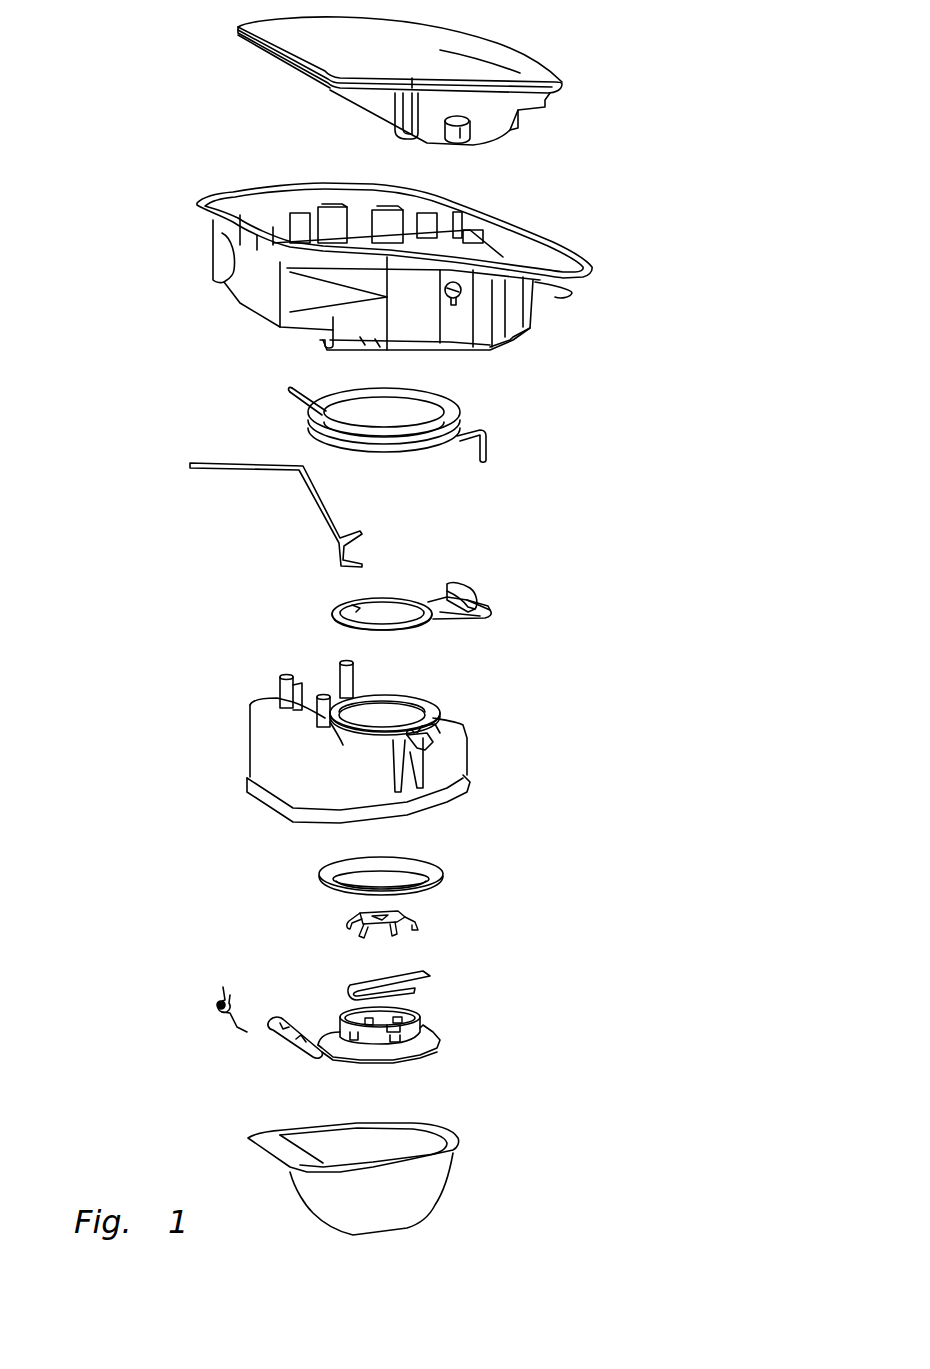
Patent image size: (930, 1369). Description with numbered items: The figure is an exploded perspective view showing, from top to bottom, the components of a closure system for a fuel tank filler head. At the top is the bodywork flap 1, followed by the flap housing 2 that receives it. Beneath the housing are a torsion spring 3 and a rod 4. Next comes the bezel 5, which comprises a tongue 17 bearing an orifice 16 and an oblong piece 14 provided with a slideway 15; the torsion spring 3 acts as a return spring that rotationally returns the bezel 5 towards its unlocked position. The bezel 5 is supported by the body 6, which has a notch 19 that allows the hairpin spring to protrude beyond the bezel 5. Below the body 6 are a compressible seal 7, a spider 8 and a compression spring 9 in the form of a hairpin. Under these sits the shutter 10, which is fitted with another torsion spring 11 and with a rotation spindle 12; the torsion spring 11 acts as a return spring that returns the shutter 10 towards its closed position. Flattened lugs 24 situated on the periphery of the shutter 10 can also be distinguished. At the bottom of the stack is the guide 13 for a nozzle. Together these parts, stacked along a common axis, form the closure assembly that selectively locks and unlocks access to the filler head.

The bodywork flap 1 is at (545, 72).
The flap housing 2 is at (533, 278).
The torsion spring 3 is at (458, 406).
The rod 4 is at (320, 515).
The bezel 5 is at (393, 600).
The body 6 is at (450, 767).
The compressible seal 7 is at (417, 867).
The spider 8 is at (360, 913).
The compression spring 9 is at (435, 972).
The shutter 10 is at (423, 1047).
The torsion spring 11 is at (222, 1010).
The rotation spindle 12 is at (300, 1043).
The guide 13 is at (403, 1187).
The oblong piece 14 is at (483, 603).
The slideway 15 is at (470, 593).
The orifice 16 is at (475, 620).
The tongue 17 is at (447, 607).
The notch 19 is at (437, 712).
The flattened lug 24 is at (355, 999).